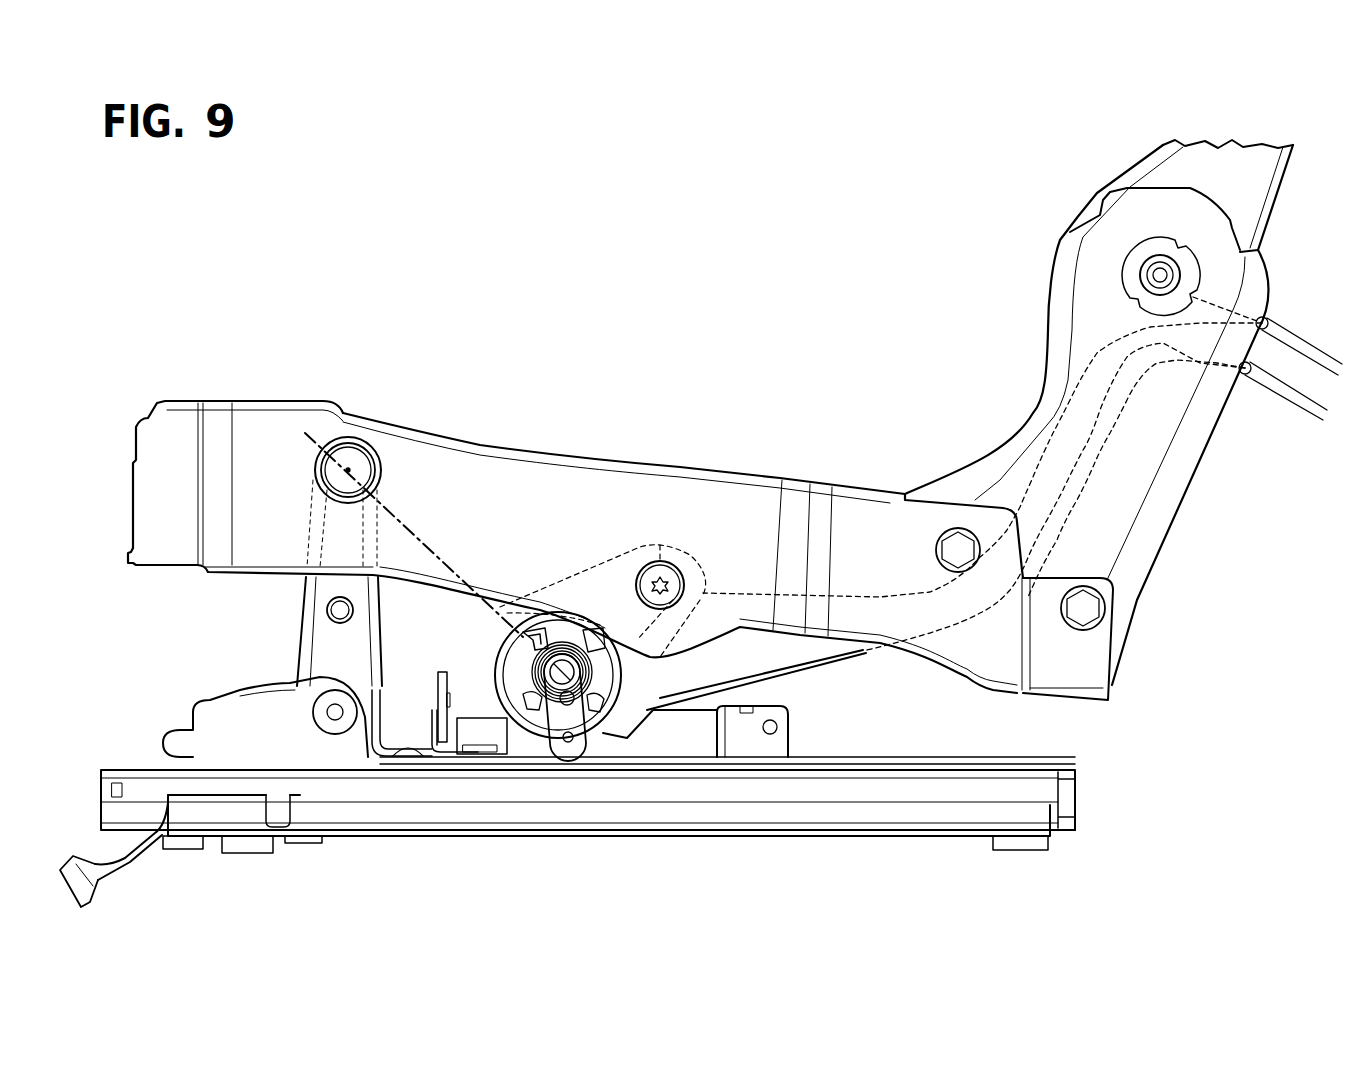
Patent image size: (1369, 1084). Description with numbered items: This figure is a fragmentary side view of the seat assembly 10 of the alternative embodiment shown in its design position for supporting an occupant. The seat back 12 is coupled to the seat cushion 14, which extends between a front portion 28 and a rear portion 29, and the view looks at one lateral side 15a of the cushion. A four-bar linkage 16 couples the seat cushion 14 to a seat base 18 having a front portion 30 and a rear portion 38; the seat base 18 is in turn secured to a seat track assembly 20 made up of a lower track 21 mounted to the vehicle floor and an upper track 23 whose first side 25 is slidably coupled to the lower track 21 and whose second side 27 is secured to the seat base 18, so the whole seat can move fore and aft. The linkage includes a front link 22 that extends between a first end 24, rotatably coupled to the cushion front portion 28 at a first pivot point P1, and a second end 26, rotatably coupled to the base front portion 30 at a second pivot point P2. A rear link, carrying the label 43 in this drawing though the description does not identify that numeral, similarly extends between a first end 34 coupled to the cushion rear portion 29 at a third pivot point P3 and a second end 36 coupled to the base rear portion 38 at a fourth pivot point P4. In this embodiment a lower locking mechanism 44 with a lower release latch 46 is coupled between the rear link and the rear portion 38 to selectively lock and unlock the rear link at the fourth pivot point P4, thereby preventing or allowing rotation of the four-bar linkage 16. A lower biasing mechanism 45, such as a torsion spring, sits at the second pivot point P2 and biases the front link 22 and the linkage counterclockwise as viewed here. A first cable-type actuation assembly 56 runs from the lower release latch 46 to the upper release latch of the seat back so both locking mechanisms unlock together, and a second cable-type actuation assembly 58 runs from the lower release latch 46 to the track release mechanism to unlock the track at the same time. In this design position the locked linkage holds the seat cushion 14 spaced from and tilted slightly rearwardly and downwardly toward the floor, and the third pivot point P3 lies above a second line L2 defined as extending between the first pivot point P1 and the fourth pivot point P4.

The seat assembly 10 is at (787, 274).
The seat back 12 is at (1170, 141).
The seat cushion 14 is at (255, 383).
The lateral side 15a is at (558, 551).
The four-bar linkage 16 is at (417, 674).
The seat base 18 is at (465, 758).
The seat track assembly 20 is at (690, 846).
The lower track 21 is at (1026, 834).
The front link 22 is at (292, 605).
The upper track 23 is at (1079, 786).
The first end 24 is at (345, 445).
The first side 25 is at (1064, 831).
The second end 26 is at (290, 686).
The second side 27 is at (997, 764).
The front portion 28 is at (152, 403).
The rear portion 29 is at (1110, 698).
The front portion 30 is at (226, 740).
The first end 34 is at (662, 548).
The second end 36 is at (528, 737).
The rear portion 38 is at (802, 736).
The rear link 43 is at (670, 674).
The lower locking mechanism 44 is at (595, 565).
The lower biasing mechanism 45 is at (276, 692).
The lower release latch 46 is at (578, 722).
The first cable-type actuation assembly 56 is at (1330, 352).
The second cable-type actuation assembly 58 is at (1320, 416).
The first pivot point P1 is at (356, 470).
The second pivot point P2 is at (334, 714).
The third pivot point P3 is at (662, 586).
The fourth pivot point P4 is at (565, 716).
The second line L2 is at (418, 532).